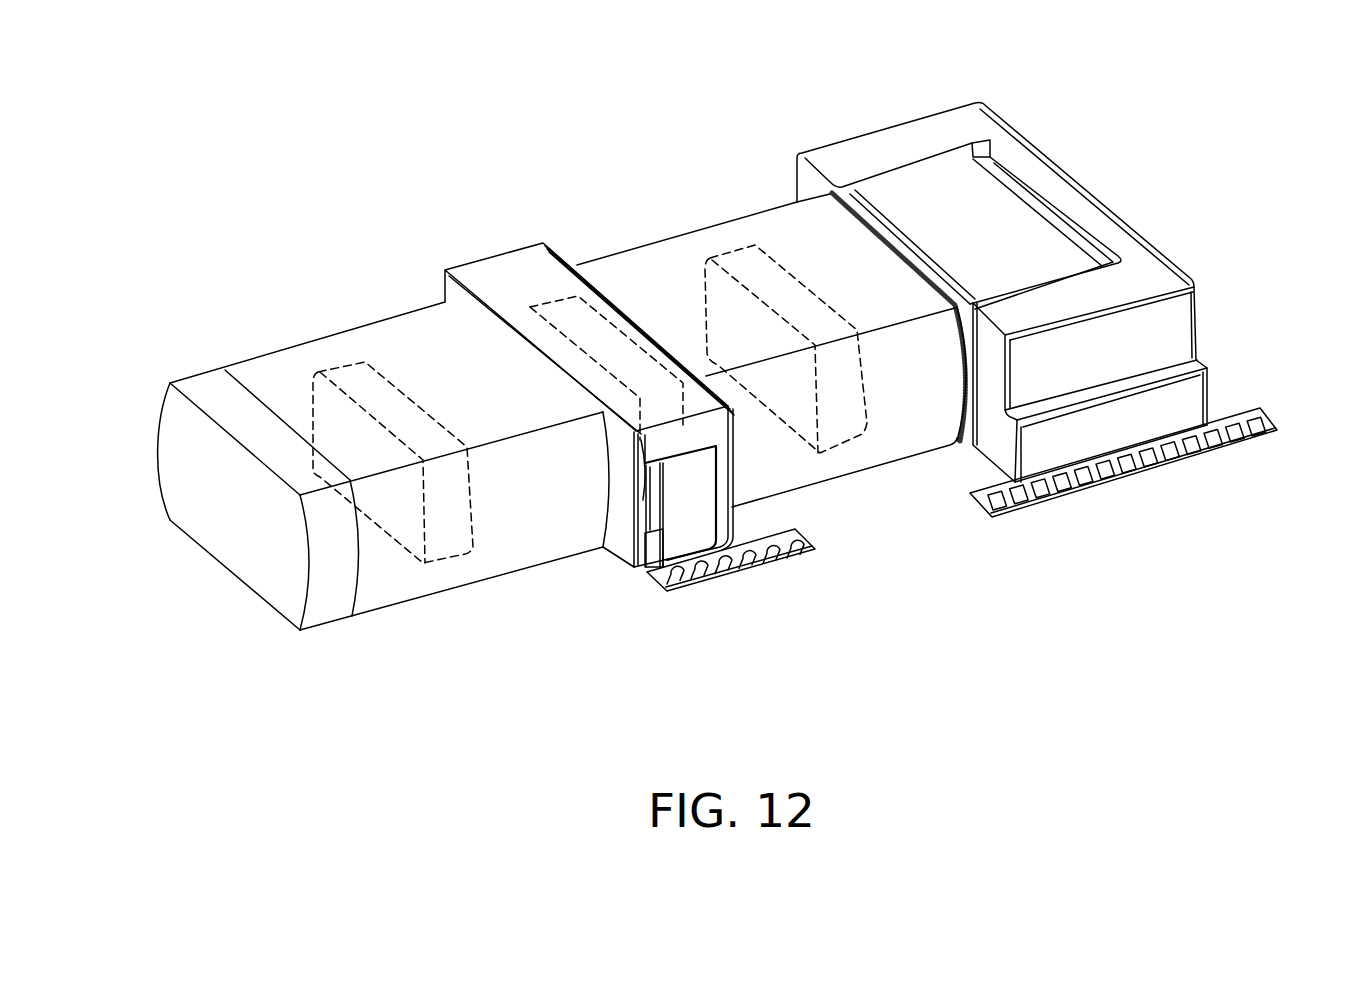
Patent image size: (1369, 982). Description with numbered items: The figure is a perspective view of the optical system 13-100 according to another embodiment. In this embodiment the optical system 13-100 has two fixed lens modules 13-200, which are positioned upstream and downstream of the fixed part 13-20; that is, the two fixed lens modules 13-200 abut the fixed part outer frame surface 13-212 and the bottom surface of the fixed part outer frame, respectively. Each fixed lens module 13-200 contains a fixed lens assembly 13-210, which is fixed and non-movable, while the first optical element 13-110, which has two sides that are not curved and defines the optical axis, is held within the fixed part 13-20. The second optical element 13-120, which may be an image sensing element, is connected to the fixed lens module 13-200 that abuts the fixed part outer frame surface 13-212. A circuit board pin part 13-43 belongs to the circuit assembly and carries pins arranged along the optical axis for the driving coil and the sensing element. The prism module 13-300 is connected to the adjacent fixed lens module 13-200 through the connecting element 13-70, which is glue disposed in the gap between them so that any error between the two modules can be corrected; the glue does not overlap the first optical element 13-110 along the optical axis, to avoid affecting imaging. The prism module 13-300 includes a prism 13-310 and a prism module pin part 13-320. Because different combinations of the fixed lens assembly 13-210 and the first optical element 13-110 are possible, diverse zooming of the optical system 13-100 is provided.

The optical system 13-100 is at (158, 79).
The fixed part 13-20 is at (589, 354).
The circuit board pin part 13-43 is at (807, 528).
The connecting element 13-70 is at (857, 208).
The first optical element 13-110 is at (573, 300).
The second optical element 13-120 is at (200, 387).
The fixed lens module 13-200 is at (264, 377).
The fixed lens assembly 13-210 is at (352, 372).
The fixed part outer frame surface 13-212 is at (623, 550).
The prism module 13-300 is at (1002, 264).
The prism 13-310 is at (928, 195).
The prism module pin part 13-320 is at (1260, 410).